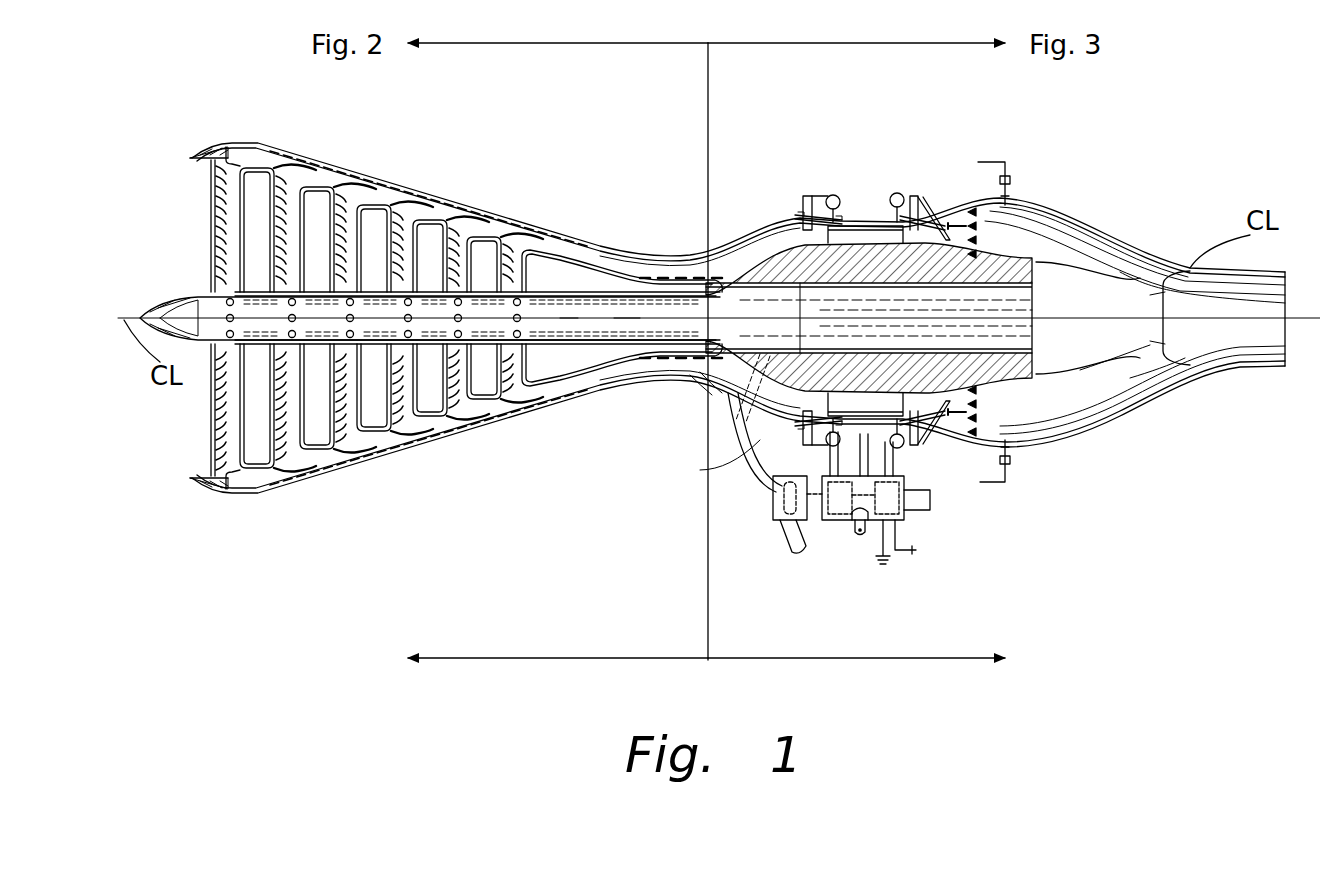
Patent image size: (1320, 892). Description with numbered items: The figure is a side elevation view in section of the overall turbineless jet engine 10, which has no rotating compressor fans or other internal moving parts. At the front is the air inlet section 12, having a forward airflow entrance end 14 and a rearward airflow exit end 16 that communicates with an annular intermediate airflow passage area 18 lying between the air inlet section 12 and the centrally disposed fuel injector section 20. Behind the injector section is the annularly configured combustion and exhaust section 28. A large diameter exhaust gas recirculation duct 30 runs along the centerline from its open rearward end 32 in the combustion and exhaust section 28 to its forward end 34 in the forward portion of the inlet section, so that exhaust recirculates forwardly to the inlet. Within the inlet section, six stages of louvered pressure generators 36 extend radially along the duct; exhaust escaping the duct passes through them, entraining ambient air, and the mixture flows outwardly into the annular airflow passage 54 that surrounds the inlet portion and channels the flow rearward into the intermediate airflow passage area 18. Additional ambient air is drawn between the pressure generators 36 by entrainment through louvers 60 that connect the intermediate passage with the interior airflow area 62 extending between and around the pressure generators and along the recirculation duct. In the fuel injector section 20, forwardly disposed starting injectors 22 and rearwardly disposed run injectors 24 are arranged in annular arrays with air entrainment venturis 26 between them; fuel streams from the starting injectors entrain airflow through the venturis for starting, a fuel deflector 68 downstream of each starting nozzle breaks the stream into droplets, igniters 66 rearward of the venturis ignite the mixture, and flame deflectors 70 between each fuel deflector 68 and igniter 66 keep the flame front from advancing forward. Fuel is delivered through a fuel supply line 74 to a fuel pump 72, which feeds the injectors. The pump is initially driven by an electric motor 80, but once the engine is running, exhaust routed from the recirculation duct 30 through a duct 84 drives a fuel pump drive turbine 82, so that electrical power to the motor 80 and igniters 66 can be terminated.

The engine 10 is at (302, 578).
The air inlet section 12 is at (305, 478).
The forward end 14 is at (200, 484).
The rearward end 16 is at (527, 418).
The intermediate airflow passage area 18 is at (637, 247).
The fuel injector section 20 is at (888, 122).
The starting injectors 22 is at (806, 202).
The run injectors 24 is at (926, 196).
The air entrainment venturis 26 is at (868, 222).
The combustion and exhaust section 28 is at (1085, 212).
The exhaust gas recirculation duct 30 is at (600, 319).
The rearward end 32 is at (1036, 302).
The forward end 34 is at (205, 300).
The louvered pressure generators 36 is at (220, 232).
The annular airflow passage 54 is at (497, 228).
The louvers 60 is at (706, 398).
The interior airflow area 62 is at (430, 228).
The igniters 66 is at (1006, 162).
The fuel deflector 68 is at (955, 410).
The flame deflectors 70 is at (982, 226).
The fuel pump 72 is at (850, 530).
The fuel supply line 74 is at (935, 500).
The electric motor 80 is at (918, 535).
The fuel pump drive turbine 82 is at (772, 520).
The duct 84 is at (742, 470).